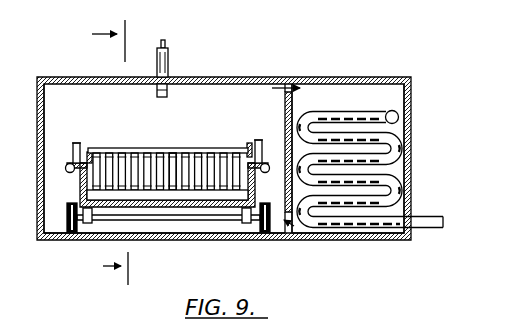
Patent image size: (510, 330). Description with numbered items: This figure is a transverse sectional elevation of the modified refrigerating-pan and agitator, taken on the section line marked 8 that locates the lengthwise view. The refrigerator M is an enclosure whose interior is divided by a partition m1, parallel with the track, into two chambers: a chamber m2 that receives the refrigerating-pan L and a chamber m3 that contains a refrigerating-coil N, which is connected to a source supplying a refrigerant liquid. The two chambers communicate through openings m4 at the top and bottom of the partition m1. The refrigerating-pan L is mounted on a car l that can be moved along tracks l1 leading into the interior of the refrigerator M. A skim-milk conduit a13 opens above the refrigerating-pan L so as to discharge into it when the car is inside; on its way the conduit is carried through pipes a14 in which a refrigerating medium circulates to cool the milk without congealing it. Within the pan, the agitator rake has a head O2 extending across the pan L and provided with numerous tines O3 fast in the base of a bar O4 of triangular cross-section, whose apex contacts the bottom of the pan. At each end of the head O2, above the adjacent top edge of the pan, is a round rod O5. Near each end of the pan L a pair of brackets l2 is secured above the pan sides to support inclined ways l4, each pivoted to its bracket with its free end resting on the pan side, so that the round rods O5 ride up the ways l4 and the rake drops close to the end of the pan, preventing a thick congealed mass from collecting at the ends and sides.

The refrigerator M is at (240, 78).
The partition m1 is at (285, 174).
The chamber for the refrigerating-pan m2 is at (164, 158).
The chamber for the refrigerating-coil m3 is at (348, 158).
The openings m4 is at (279, 90).
The refrigerating-coil N is at (360, 118).
The skim-milk conduit a13 is at (166, 45).
The pipes a14 is at (168, 62).
The car l is at (79, 189).
The refrigerating-pan L is at (67, 170).
The tracks l1 is at (67, 231).
The brackets l2 is at (73, 152).
The inclined ways l4 is at (88, 152).
The head of the rake O2 is at (138, 152).
The tines O3 is at (188, 153).
The bar O4 is at (184, 200).
The round rod O5 is at (91, 149).
The section line of FIG. 8 is at (102, 152).